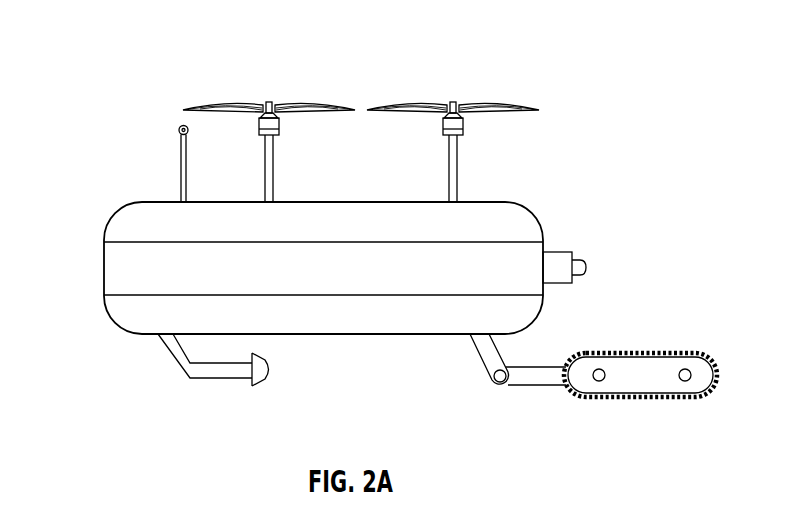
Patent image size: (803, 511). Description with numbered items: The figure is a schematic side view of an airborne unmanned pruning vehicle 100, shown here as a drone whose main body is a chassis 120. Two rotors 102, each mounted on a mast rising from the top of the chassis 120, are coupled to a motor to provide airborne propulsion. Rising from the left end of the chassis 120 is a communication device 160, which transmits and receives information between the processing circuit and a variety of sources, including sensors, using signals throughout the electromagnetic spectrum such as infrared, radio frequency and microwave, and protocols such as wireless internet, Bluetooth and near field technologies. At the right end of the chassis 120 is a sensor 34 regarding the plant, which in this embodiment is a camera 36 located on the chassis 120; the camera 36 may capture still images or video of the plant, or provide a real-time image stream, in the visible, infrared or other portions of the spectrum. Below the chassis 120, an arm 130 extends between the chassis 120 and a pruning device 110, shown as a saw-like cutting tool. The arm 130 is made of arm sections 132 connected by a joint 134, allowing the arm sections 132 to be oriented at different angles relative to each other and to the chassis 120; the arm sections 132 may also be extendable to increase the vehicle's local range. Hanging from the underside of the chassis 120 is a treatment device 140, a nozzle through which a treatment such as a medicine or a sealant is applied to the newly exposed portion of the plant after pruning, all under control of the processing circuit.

The unmanned pruning vehicle 100 is at (112, 58).
The rotors 102 is at (267, 100).
The pruning device 110 is at (698, 345).
The chassis 120 is at (527, 208).
The arm 130 is at (545, 392).
The arm sections 132 is at (530, 374).
The joints 134 is at (500, 384).
The treatment device 140 is at (216, 385).
The communication device 160 is at (178, 158).
The sensor 34 is at (555, 278).
The camera 36 is at (586, 266).